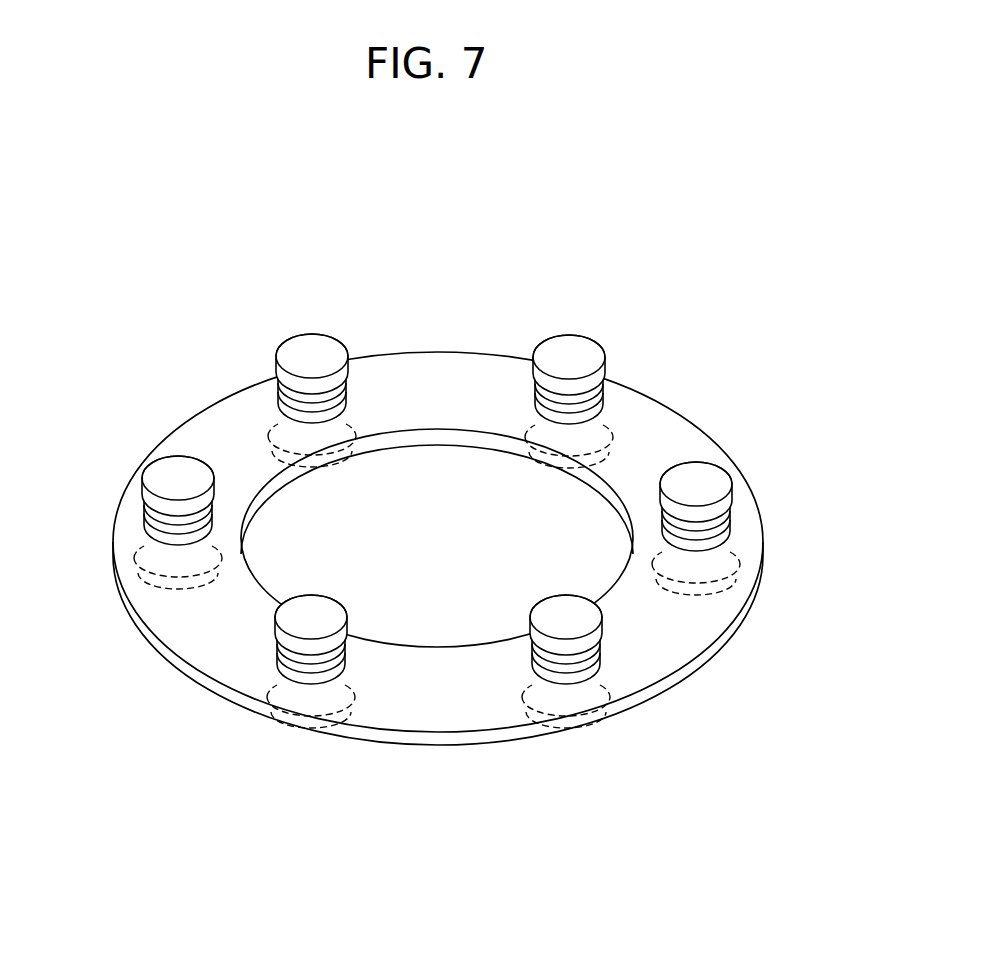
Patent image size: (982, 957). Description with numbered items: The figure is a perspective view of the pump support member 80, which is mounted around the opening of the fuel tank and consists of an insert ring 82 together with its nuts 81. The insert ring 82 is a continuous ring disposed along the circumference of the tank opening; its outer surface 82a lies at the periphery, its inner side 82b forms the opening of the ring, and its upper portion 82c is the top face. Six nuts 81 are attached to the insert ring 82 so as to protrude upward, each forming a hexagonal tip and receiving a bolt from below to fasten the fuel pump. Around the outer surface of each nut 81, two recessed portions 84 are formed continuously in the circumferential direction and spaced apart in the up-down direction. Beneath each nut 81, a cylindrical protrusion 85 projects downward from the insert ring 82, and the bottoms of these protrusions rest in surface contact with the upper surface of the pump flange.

The pump support member 80 is at (644, 387).
The nut 81 is at (328, 336).
The insert ring 82 is at (180, 623).
The outer surface of the insert ring 82a is at (762, 522).
The inner side of the insert ring 82b is at (413, 440).
The upper portion of the insert ring 82c is at (698, 605).
The recessed portion 84 is at (283, 395).
The cylindrical protrusion 85 is at (268, 447).